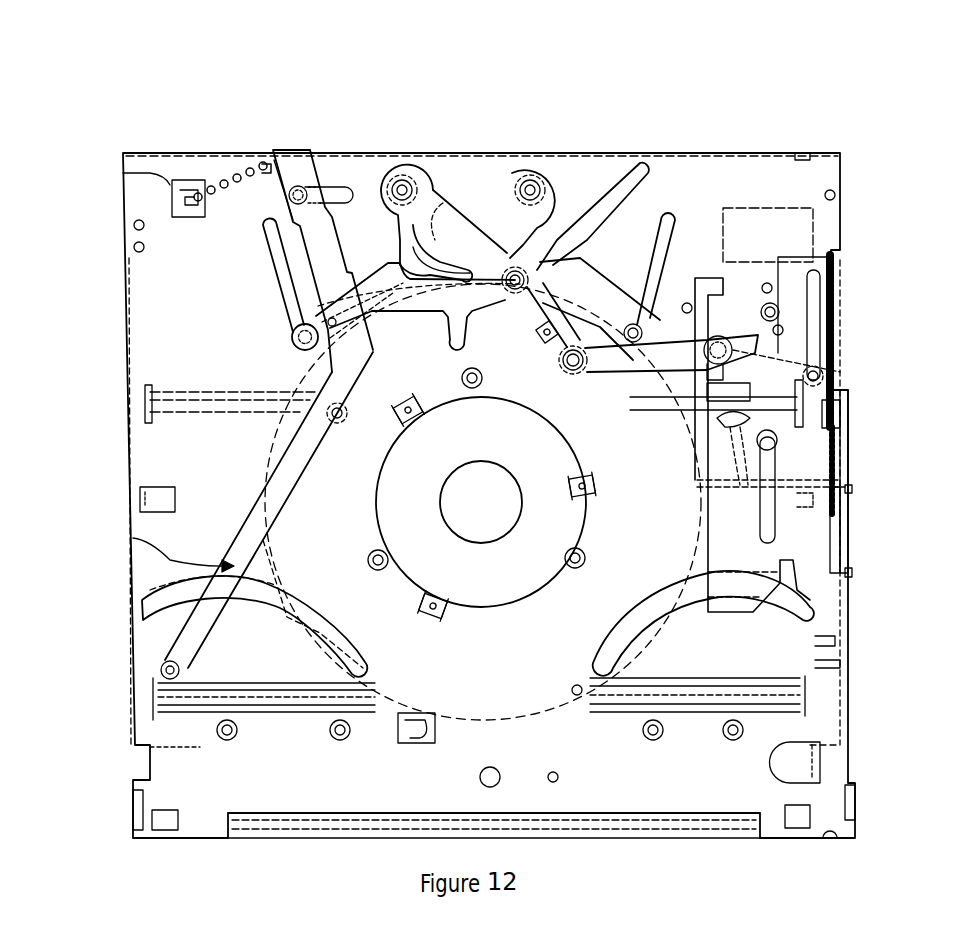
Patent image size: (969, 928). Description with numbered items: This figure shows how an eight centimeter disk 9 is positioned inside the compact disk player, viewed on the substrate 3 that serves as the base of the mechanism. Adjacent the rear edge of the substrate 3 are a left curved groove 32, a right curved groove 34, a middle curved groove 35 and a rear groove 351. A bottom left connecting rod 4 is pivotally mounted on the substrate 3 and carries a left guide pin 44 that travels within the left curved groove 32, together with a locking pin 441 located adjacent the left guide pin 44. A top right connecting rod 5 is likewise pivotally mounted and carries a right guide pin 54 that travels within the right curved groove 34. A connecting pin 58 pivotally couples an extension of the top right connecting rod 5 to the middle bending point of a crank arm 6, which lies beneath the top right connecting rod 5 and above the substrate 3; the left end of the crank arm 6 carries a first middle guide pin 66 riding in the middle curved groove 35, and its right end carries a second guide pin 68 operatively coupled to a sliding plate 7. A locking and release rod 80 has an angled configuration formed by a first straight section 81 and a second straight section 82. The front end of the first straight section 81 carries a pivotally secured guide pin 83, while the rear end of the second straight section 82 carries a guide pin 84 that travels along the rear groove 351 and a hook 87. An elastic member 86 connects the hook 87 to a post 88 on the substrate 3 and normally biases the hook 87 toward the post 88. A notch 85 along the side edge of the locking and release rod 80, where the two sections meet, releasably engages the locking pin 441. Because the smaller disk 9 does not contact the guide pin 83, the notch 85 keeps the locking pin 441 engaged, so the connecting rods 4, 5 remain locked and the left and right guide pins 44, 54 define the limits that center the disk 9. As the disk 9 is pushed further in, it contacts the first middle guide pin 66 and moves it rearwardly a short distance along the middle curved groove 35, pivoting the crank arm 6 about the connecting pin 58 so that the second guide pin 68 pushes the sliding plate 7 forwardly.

The substrate 3 is at (489, 495).
The bottom left connecting rod 4 is at (345, 297).
The top right connecting rod 5 is at (443, 203).
The crank arm 6 is at (605, 382).
The sliding plate 7 is at (697, 478).
The 8 cm disk 9 is at (565, 740).
The left curved groove 32 is at (268, 240).
The right curved groove 34 is at (667, 217).
The middle curved groove 35 is at (580, 207).
The left guide pin 44 is at (292, 340).
The right guide pin 54 is at (632, 323).
The connecting pin 58 is at (588, 370).
The first middle guide pin 66 is at (518, 292).
The second guide pin 68 is at (824, 373).
The locking and release rod 80 is at (133, 538).
The first straight section 81 is at (290, 493).
The second straight section 82 is at (312, 160).
The guide pin 83 is at (185, 670).
The guide pin 84 is at (293, 160).
The notch 85 is at (372, 345).
The elastic member 86 is at (228, 178).
The hook 87 is at (268, 155).
The post 88 is at (123, 178).
The rear groove 351 is at (352, 183).
The locking pin 441 is at (345, 330).